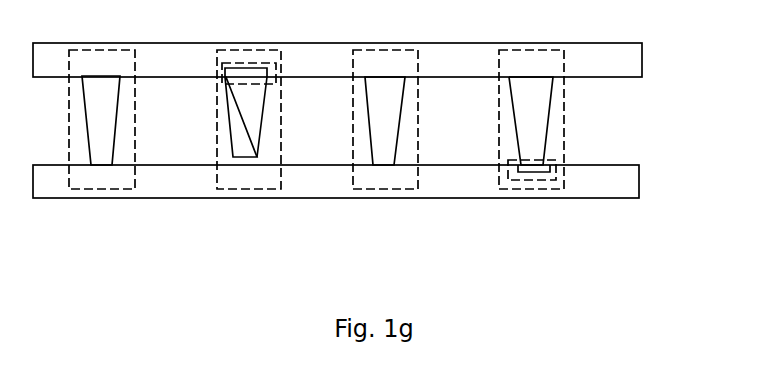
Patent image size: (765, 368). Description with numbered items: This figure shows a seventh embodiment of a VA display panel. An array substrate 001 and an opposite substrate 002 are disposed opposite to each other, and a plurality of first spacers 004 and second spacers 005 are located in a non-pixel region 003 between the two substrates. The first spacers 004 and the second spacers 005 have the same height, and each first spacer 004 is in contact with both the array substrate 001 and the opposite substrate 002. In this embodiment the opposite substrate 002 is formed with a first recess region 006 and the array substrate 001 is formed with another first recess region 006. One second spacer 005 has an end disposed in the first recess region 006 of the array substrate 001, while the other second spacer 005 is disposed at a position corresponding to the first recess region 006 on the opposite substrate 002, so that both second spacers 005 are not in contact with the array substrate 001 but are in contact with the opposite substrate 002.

The array substrate 001 is at (619, 181).
The opposite substrate 002 is at (621, 59).
The non-pixel region 003 is at (85, 188).
The first spacer 004 is at (103, 138).
The second spacer 005 is at (250, 133).
The first recess region 006 is at (257, 63).